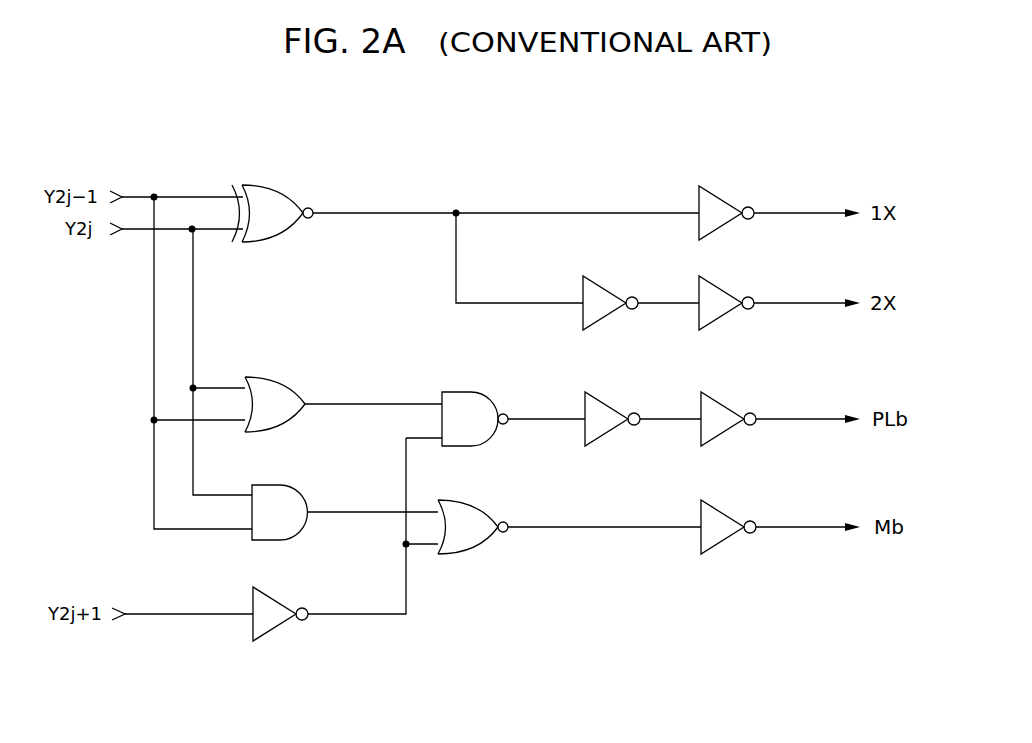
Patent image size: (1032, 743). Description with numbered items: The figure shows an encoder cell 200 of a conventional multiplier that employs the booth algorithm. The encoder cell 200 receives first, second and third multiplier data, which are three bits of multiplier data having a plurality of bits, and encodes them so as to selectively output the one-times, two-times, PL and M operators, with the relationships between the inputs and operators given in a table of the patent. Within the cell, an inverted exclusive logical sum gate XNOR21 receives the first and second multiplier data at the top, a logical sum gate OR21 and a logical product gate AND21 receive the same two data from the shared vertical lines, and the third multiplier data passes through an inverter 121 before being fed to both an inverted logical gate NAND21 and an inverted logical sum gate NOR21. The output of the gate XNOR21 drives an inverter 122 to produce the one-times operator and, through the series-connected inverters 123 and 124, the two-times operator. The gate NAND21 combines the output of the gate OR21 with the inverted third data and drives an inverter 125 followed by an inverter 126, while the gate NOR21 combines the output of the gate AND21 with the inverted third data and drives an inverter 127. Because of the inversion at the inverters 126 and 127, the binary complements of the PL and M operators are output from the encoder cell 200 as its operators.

The encoder cell 200 is at (832, 128).
The inverter 121 is at (278, 600).
The inverter 122 is at (725, 194).
The inverter 123 is at (609, 288).
The inverter 124 is at (725, 284).
The inverter 125 is at (611, 401).
The inverter 126 is at (727, 401).
The inverter 127 is at (727, 509).
The inverted exclusive logical sum gate XNOR21 is at (270, 186).
The logical sum gate OR21 is at (280, 377).
The logical product gate AND21 is at (283, 484).
The inverted logical gate NAND21 is at (474, 392).
The inverted logical sum gate NOR21 is at (476, 500).